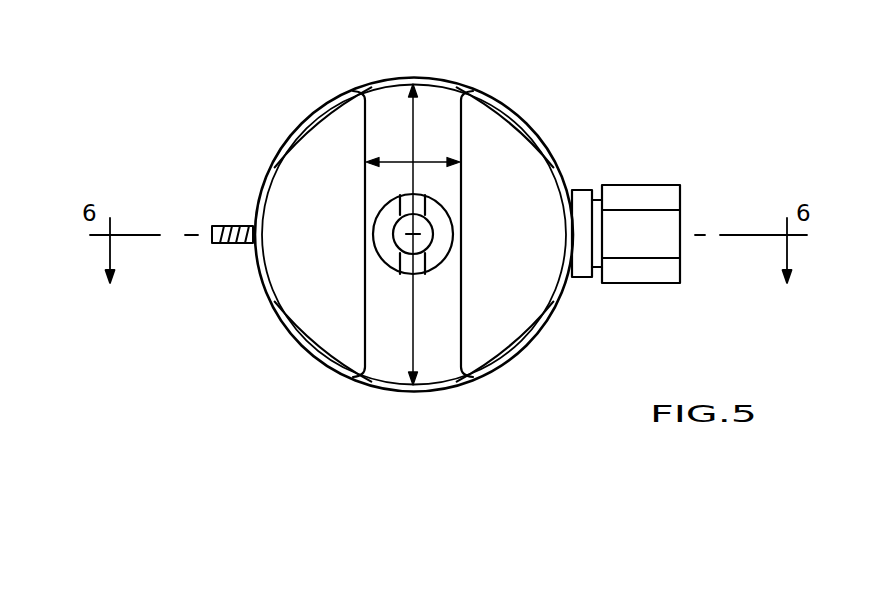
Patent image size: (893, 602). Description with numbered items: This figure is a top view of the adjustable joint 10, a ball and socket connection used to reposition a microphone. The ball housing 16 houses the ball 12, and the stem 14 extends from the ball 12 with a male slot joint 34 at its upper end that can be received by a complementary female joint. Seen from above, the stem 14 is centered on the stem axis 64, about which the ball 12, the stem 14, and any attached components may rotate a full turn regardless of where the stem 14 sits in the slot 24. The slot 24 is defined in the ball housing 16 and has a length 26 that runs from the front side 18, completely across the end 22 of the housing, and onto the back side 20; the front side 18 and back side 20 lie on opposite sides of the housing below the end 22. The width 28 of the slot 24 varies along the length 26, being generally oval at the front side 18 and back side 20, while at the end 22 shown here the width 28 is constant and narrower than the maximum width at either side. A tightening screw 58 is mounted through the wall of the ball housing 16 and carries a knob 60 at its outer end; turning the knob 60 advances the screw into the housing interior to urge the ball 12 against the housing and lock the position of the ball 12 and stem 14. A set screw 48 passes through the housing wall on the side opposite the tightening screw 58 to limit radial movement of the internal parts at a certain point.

The adjustable joint 10 is at (673, 75).
The ball 12 is at (390, 357).
The stem 14 is at (453, 234).
The ball housing 16 is at (555, 285).
The front side 18 is at (530, 106).
The back side 20 is at (292, 372).
The end 22 is at (296, 197).
The slot 24 is at (457, 294).
The length 26 is at (415, 315).
The width 28 is at (402, 158).
The male slot joint 34 is at (403, 265).
The set screw 48 is at (227, 245).
The tightening screw 58 is at (595, 208).
The knob 60 is at (643, 195).
The stem axis 64 is at (413, 234).